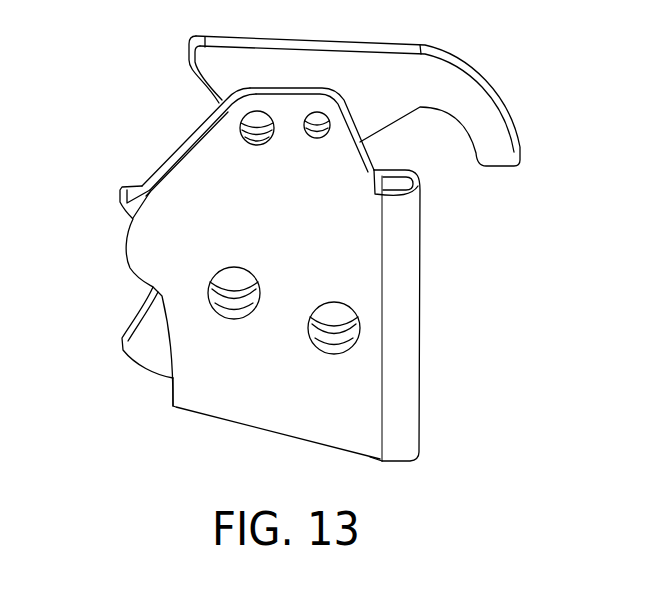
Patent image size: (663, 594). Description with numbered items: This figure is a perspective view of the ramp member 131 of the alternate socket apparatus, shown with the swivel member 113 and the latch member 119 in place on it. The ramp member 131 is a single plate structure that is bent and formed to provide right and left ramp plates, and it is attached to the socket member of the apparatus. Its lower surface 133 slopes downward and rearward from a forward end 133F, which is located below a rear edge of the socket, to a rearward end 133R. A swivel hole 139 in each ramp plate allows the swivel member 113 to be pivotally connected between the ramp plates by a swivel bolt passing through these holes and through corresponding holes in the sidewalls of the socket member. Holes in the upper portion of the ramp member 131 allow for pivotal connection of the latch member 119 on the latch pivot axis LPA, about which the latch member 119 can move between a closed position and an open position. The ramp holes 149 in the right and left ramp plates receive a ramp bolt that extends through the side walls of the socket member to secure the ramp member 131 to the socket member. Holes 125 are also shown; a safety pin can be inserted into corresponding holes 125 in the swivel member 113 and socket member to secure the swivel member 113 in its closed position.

The swivel member 113 is at (137, 327).
The latch member 119 is at (367, 43).
The holes 125 is at (316, 138).
The ramp member 131 is at (418, 265).
The lower surface 133 is at (263, 435).
The forward end 133F is at (173, 407).
The rearward end 133R is at (383, 462).
The swivel hole 139 is at (233, 319).
The ramp holes 149 is at (333, 354).
The latch pivot axis LPA is at (257, 130).